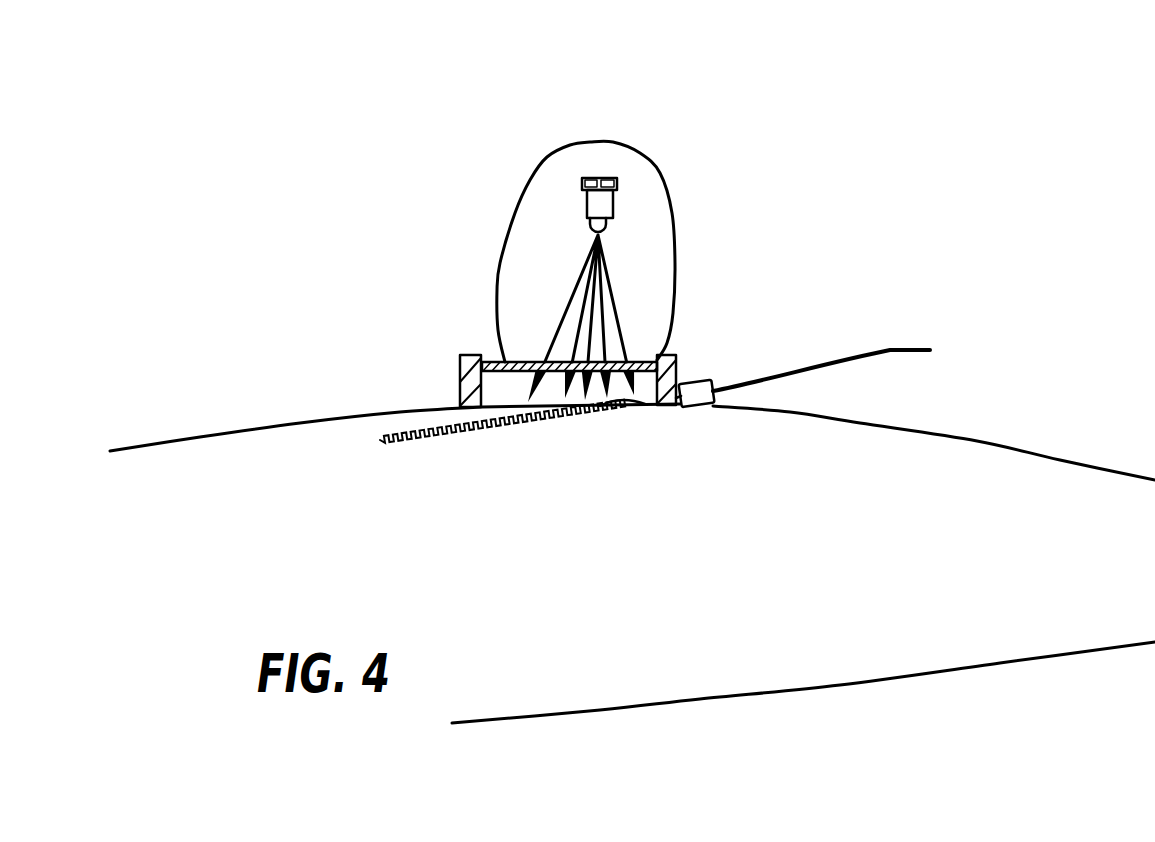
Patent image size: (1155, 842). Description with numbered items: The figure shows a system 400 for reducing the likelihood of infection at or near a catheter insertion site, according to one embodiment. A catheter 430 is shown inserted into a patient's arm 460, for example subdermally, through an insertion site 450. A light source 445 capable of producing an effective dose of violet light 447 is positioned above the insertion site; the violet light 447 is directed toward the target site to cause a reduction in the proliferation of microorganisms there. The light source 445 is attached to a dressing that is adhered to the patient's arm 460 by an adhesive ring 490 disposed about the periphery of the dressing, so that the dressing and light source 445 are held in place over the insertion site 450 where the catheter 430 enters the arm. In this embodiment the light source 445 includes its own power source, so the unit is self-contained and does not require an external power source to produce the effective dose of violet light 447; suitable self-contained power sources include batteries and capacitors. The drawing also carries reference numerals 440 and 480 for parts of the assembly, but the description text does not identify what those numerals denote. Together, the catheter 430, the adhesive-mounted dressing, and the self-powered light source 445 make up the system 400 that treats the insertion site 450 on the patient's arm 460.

The system 400 is at (450, 135).
The catheter 430 is at (890, 349).
The housing 440 is at (614, 122).
The light source 445 is at (612, 178).
The violet light 447 is at (650, 294).
The insertion site 450 is at (640, 432).
The patient's arm 460 is at (595, 455).
The plate 480 is at (502, 362).
The adhesive ring 490 is at (463, 358).